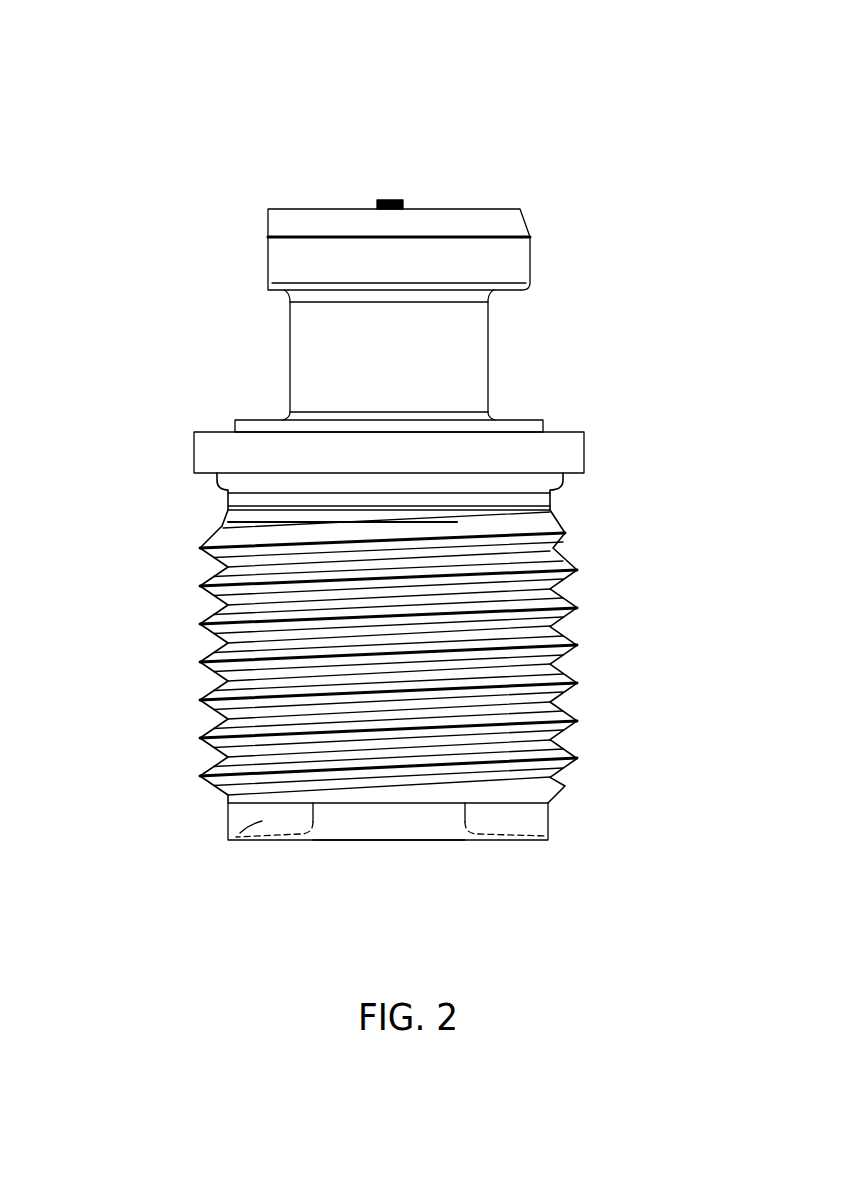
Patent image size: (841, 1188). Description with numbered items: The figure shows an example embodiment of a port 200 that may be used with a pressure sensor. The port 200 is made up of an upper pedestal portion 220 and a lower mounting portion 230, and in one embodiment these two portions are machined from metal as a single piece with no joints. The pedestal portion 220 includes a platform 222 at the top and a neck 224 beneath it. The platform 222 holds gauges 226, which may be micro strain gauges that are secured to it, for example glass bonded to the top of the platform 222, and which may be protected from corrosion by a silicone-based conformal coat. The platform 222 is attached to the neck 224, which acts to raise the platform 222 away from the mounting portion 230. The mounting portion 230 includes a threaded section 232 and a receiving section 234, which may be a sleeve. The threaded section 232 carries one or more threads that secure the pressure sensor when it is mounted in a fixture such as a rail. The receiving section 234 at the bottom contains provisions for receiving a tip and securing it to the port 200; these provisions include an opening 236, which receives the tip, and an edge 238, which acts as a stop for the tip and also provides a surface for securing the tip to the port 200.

The port 200 is at (124, 62).
The pedestal portion 220 is at (612, 207).
The platform 222 is at (317, 262).
The neck 224 is at (313, 362).
The gauges 226 is at (388, 200).
The mounting portion 230 is at (612, 475).
The threaded section 232 is at (177, 472).
The receiving section 234 is at (232, 836).
The opening 236 is at (397, 820).
The edge 238 is at (500, 840).